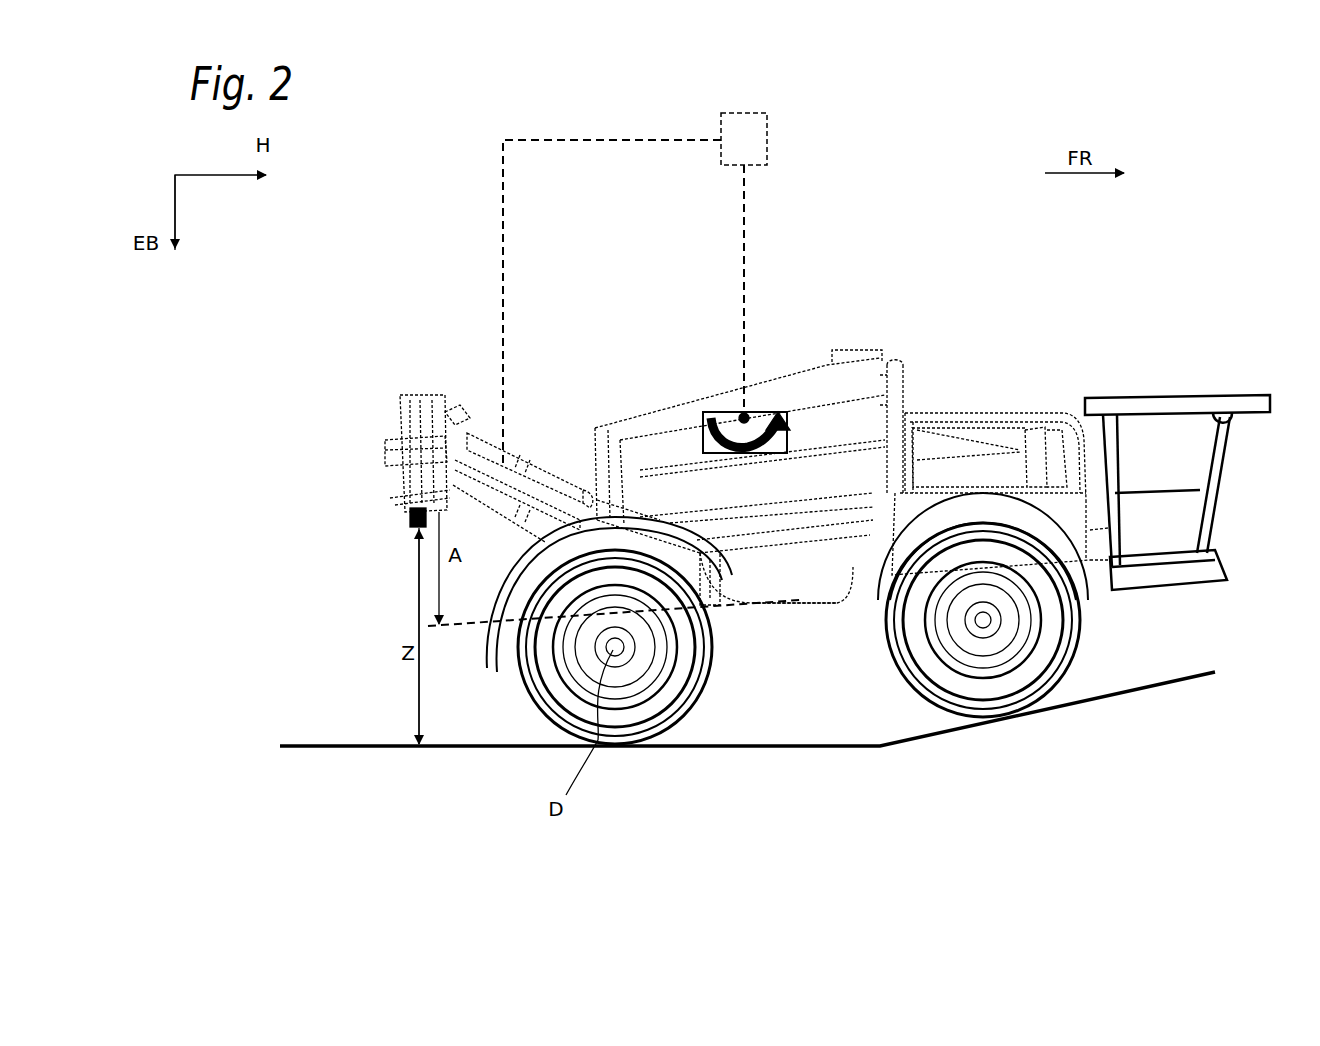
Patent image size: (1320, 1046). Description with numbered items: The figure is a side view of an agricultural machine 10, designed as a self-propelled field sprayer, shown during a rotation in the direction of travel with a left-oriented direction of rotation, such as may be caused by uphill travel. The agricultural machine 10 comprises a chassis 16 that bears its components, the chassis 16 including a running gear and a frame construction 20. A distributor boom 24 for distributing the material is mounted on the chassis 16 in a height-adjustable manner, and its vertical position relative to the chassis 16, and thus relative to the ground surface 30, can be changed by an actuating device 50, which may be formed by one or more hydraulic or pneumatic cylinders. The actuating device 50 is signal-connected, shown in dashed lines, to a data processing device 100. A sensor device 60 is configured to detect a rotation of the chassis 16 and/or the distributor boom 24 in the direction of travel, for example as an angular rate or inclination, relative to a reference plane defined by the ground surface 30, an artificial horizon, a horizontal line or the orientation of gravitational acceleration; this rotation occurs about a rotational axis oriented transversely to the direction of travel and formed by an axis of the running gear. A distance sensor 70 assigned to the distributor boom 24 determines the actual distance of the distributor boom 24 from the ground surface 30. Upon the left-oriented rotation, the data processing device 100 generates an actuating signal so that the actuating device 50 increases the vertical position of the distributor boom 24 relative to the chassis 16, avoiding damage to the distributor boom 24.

The agricultural machine 10 is at (860, 156).
The chassis 16 is at (888, 592).
The frame construction 20 is at (615, 647).
The distributor boom 24 is at (346, 424).
The ground surface 30 is at (445, 748).
The actuating device 50 is at (488, 458).
The sensor device 60 is at (728, 418).
The distance sensor 70 is at (408, 525).
The data processing device 100 is at (728, 152).